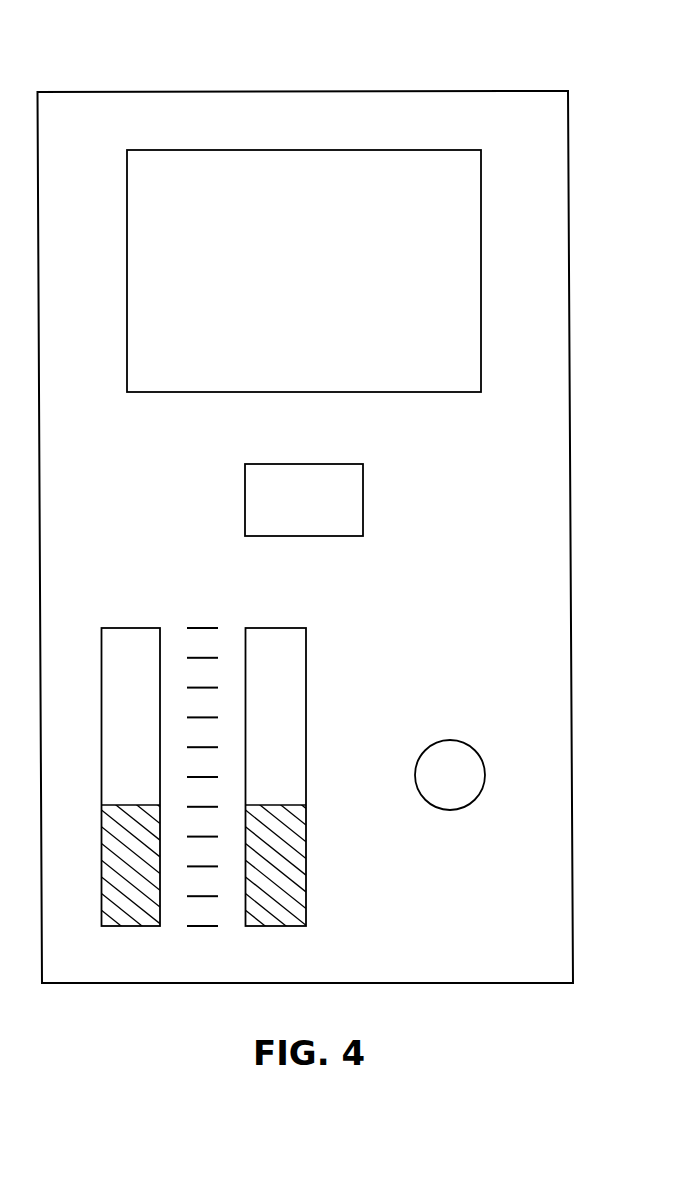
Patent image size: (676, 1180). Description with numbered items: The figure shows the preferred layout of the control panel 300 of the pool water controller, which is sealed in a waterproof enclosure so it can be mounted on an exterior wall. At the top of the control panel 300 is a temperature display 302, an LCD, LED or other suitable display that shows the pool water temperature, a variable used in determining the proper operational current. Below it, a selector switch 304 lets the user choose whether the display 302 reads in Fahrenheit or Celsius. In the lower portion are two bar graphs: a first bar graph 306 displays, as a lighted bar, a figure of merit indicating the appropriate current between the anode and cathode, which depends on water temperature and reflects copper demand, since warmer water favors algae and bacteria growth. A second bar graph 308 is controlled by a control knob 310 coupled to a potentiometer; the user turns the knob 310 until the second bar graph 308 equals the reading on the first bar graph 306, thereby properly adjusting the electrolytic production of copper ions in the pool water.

The control panel 300 is at (128, 77).
The temperature display 302 is at (481, 175).
The selector switch 304 is at (363, 488).
The first bar graph 306 is at (101, 714).
The second bar graph 308 is at (272, 627).
The control knob 310 is at (480, 751).